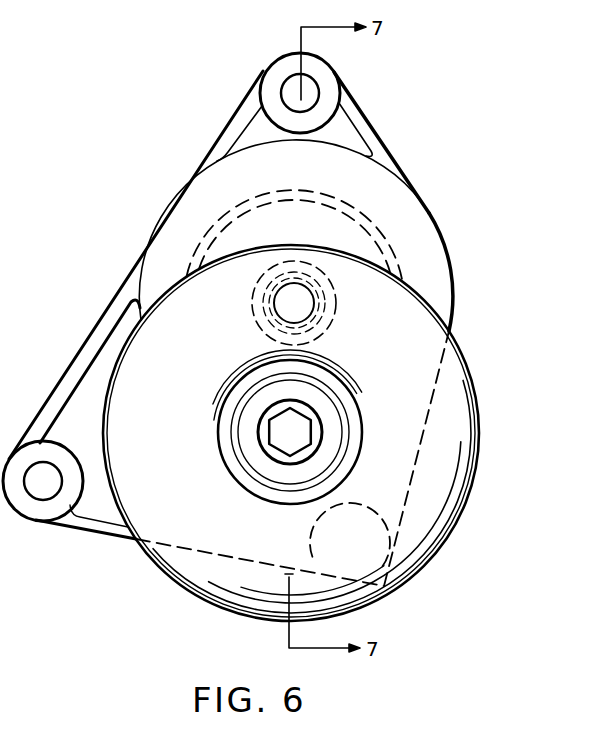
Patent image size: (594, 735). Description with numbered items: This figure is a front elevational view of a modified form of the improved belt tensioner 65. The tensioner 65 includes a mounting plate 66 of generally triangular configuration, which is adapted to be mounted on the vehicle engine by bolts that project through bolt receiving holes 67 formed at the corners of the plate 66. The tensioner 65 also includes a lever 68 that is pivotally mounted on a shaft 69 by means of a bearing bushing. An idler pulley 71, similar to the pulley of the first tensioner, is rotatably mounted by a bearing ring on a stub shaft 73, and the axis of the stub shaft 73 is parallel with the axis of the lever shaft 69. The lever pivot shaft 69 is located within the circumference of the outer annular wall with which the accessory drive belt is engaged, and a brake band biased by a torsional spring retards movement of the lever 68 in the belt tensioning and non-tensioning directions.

The modified belt tensioner 65 is at (448, 223).
The mounting plate 66 is at (393, 149).
The bolt receiving holes 67 is at (316, 88).
The lever 68 is at (455, 282).
The shaft 69 is at (330, 317).
The idler pulley 71 is at (482, 426).
The stub shaft 73 is at (14, 358).